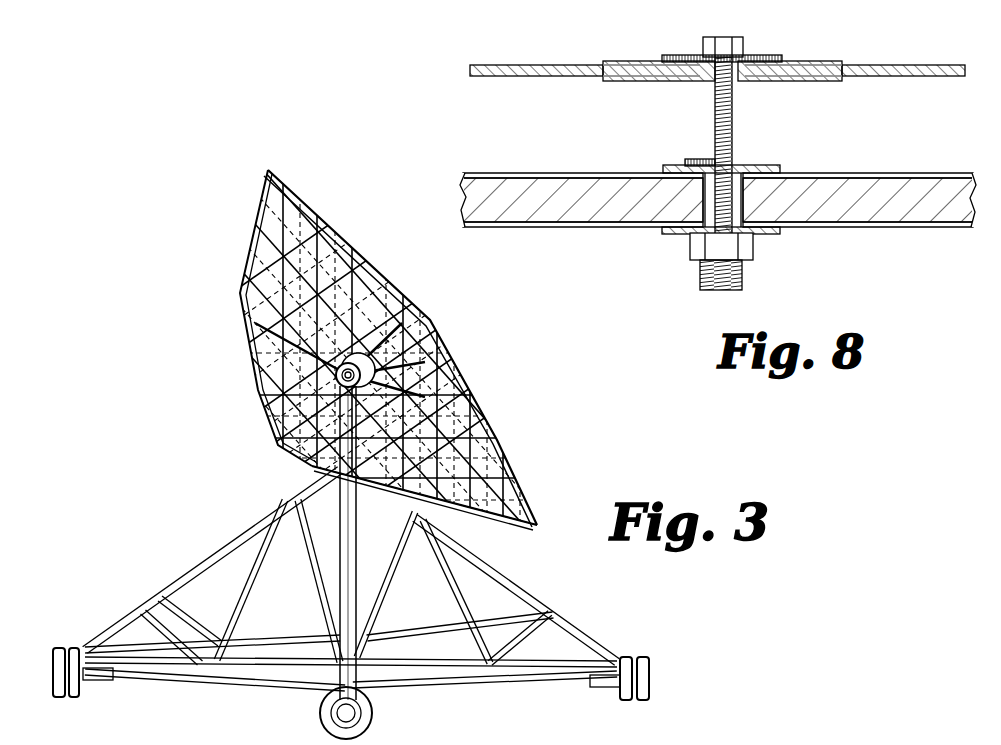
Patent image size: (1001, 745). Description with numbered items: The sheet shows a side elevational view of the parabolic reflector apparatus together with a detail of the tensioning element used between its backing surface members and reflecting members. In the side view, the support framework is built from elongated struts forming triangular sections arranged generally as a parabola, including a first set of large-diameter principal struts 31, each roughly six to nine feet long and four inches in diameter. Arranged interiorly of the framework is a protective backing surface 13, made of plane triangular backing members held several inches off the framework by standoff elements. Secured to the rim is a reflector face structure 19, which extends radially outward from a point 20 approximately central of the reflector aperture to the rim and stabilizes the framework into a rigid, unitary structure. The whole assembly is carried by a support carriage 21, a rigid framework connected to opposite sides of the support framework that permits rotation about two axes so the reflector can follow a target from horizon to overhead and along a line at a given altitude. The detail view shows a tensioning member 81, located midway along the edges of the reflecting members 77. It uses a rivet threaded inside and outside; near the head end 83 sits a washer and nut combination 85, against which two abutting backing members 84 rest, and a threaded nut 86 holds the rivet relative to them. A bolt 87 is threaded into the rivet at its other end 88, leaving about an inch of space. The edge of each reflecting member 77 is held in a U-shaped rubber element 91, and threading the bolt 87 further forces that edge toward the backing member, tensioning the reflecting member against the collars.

In FIG. 3, the protective backing surface 13 is at (262, 403).
In FIG. 3, the reflector face structure 19 is at (485, 390).
In FIG. 3, the point 20 is at (437, 325).
In FIG. 3, the support carriage 21 is at (188, 560).
In FIG. 3, the principal struts 31 is at (530, 525).
In FIG. 8, the reflecting member 77 is at (521, 70).
In FIG. 8, the tensioning member 81 is at (745, 105).
In FIG. 8, the head end of the rivet 83 is at (743, 275).
In FIG. 8, the backing members 84 is at (537, 185).
In FIG. 8, the washer and nut combination 85 is at (690, 240).
In FIG. 8, the threaded nut 86 is at (775, 171).
In FIG. 8, the bolt 87 is at (714, 110).
In FIG. 8, the other end of the rivet 88 is at (696, 158).
In FIG. 8, the U-shaped rubber element 91 is at (622, 65).